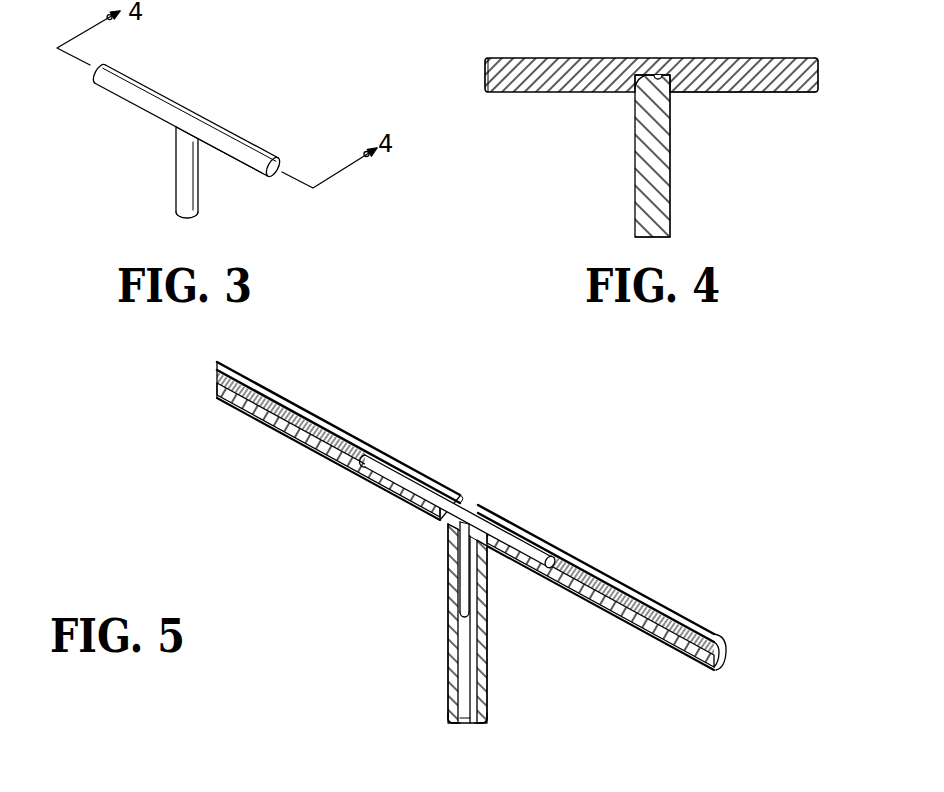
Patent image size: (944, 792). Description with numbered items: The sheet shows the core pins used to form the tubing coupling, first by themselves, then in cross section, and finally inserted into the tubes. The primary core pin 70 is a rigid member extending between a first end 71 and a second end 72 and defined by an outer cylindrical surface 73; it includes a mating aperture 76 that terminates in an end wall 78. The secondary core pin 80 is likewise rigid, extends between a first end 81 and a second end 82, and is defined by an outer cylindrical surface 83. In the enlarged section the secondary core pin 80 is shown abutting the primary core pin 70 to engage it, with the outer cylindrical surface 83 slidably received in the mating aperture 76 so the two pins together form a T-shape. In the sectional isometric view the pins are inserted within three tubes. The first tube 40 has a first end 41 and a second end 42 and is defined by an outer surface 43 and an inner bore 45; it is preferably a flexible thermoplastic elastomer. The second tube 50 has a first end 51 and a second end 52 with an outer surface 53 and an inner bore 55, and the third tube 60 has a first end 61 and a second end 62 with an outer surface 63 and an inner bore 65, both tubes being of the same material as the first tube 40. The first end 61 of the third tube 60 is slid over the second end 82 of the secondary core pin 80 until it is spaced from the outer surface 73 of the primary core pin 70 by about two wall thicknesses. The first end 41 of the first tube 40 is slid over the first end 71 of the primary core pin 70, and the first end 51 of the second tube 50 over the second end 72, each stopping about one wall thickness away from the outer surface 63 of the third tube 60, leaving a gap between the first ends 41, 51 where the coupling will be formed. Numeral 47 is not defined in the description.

In FIG. 5, the first tube 40 is at (311, 432).
In FIG. 5, the first end of first tube 41 is at (440, 518).
In FIG. 5, the second end of first tube 42 is at (221, 393).
In FIG. 5, the outer surface of first tube 43 is at (221, 362).
In FIG. 5, the inner bore of first tube 45 is at (217, 380).
In FIG. 5, the end of upper flange 47 is at (468, 496).
In FIG. 5, the second tube 50 is at (615, 572).
In FIG. 5, the first end of second tube 51 is at (487, 535).
In FIG. 5, the second end of second tube 52 is at (708, 663).
In FIG. 5, the outer surface of second tube 53 is at (727, 637).
In FIG. 5, the inner bore of second tube 55 is at (727, 652).
In FIG. 5, the third tube 60 is at (468, 645).
In FIG. 5, the first end of third tube 61 is at (447, 540).
In FIG. 5, the second end of third tube 62 is at (488, 718).
In FIG. 5, the outer surface of third tube 63 is at (447, 697).
In FIG. 5, the inner bore of third tube 65 is at (466, 707).
In FIG. 3, the primary core pin 70 is at (175, 104).
In FIG. 4, the primary core pin 70 is at (593, 63).
In FIG. 5, the primary core pin 70 is at (466, 512).
In FIG. 3, the first end of primary core pin 71 is at (107, 63).
In FIG. 4, the first end of primary core pin 71 is at (490, 65).
In FIG. 5, the first end of primary core pin 71 is at (366, 465).
In FIG. 3, the second end of primary core pin 72 is at (275, 153).
In FIG. 4, the second end of primary core pin 72 is at (807, 58).
In FIG. 5, the second end of primary core pin 72 is at (556, 560).
In FIG. 3, the outer cylindrical surface of primary core pin 73 is at (225, 157).
In FIG. 4, the outer cylindrical surface of primary core pin 73 is at (755, 92).
In FIG. 4, the mating aperture 76 is at (670, 88).
In FIG. 4, the end wall 78 is at (658, 75).
In FIG. 3, the secondary core pin 80 is at (178, 173).
In FIG. 4, the secondary core pin 80 is at (635, 170).
In FIG. 5, the secondary core pin 80 is at (450, 600).
In FIG. 3, the first end of secondary core pin 81 is at (177, 127).
In FIG. 4, the first end of secondary core pin 81 is at (636, 96).
In FIG. 5, the first end of secondary core pin 81 is at (455, 555).
In FIG. 3, the second end of secondary core pin 82 is at (178, 216).
In FIG. 4, the second end of secondary core pin 82 is at (636, 237).
In FIG. 5, the second end of secondary core pin 82 is at (470, 622).
In FIG. 3, the outer cylindrical surface of secondary core pin 83 is at (200, 212).
In FIG. 4, the outer cylindrical surface of secondary core pin 83 is at (672, 202).